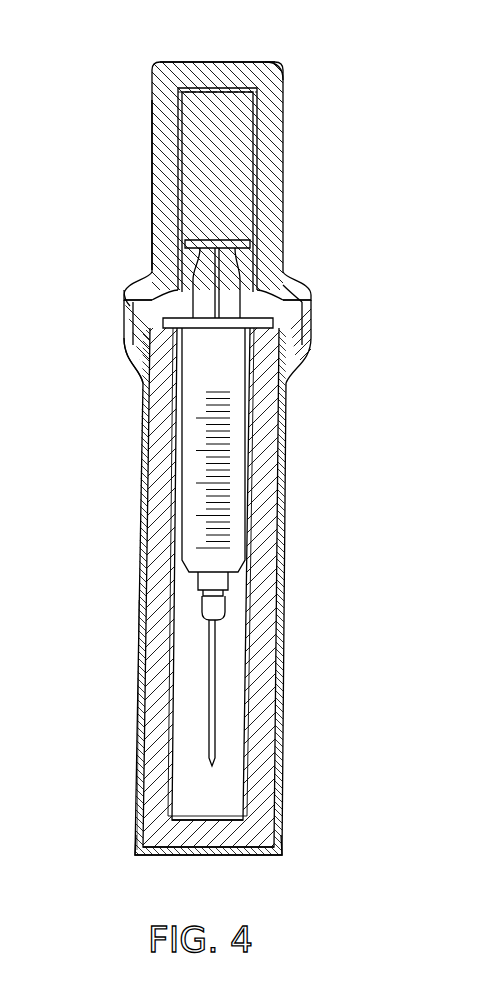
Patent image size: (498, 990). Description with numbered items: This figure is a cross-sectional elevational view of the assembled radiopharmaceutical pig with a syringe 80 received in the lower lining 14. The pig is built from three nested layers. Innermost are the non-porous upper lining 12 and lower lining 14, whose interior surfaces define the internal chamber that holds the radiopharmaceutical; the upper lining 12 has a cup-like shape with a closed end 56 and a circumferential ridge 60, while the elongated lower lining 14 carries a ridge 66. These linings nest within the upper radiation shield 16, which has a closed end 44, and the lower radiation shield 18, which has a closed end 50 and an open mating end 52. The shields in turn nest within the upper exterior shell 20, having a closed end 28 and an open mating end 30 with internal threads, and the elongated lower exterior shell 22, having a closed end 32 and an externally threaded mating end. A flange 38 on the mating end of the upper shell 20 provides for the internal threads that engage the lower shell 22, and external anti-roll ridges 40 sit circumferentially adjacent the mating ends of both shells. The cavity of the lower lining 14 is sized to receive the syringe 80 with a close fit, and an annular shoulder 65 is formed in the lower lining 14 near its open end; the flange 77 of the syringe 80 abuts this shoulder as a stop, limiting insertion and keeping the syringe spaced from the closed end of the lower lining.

The upper lining 12 is at (260, 182).
The lower lining 14 is at (213, 241).
The upper radiation shield 16 is at (165, 190).
The lower radiation shield 18 is at (162, 632).
The upper exterior shell 20 is at (286, 125).
The lower exterior shell 22 is at (138, 745).
The closed end 28 is at (236, 62).
The open mating end 30 is at (124, 326).
The closed end 32 is at (141, 876).
The flange 38 is at (123, 311).
The external anti-roll ridges 40 is at (140, 355).
The closed end 44 is at (253, 63).
The closed end 50 is at (223, 857).
The open mating end 52 is at (258, 316).
The closed end 56 is at (207, 90).
The circumferential ridge 60 is at (281, 268).
The annular shoulder 65 is at (296, 328).
The ridge 66 is at (156, 272).
The flange 77 is at (286, 290).
The syringe 80 is at (216, 739).